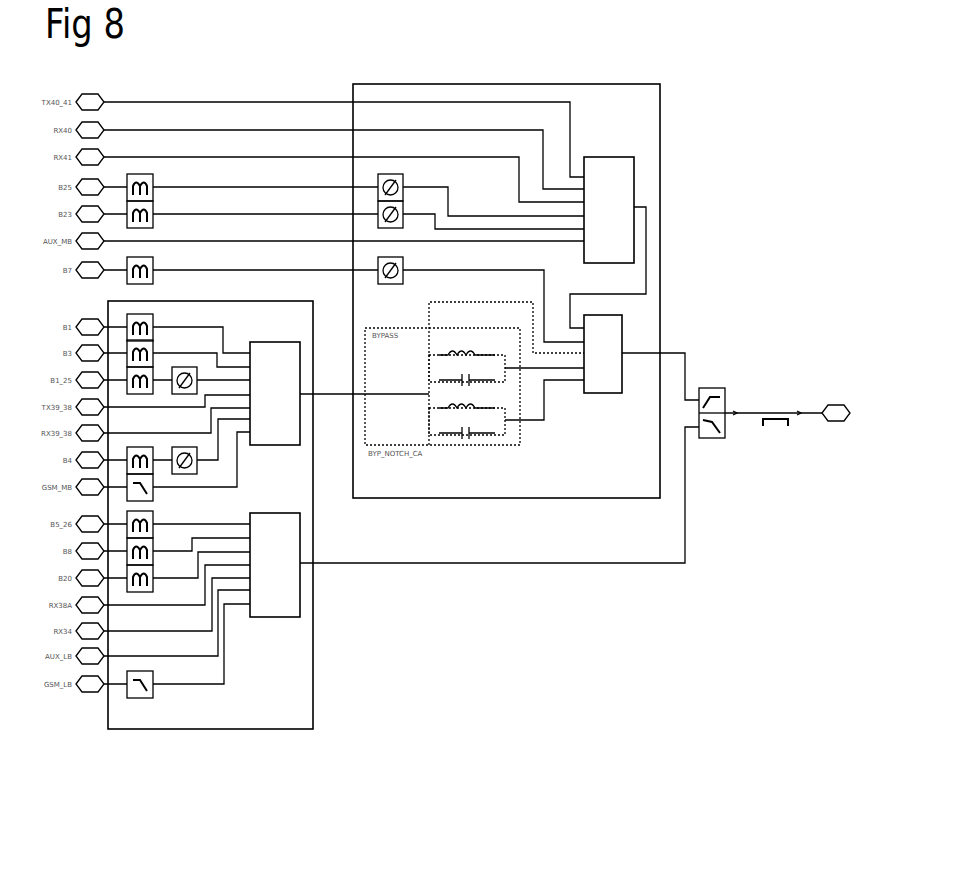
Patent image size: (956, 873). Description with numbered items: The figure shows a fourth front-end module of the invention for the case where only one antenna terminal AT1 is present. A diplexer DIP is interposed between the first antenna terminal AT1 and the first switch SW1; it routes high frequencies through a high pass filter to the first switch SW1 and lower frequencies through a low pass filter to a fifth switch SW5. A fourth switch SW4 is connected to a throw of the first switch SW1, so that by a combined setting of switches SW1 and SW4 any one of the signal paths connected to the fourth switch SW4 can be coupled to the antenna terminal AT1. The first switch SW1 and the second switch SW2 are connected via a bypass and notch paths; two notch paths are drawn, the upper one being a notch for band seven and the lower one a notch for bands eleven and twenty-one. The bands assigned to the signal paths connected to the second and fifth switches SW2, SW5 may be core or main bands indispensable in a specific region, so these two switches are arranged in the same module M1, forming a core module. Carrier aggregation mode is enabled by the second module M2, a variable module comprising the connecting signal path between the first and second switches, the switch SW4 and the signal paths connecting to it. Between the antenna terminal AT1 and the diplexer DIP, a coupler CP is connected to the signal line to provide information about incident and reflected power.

The core module M1 is at (300, 732).
The second module M2 is at (545, 498).
The first switch SW1 is at (633, 313).
The second switch SW2 is at (292, 443).
The fourth switch SW4 is at (634, 188).
The fifth switch SW5 is at (284, 590).
The diplexer DIP is at (716, 388).
The coupler CP is at (780, 440).
The first antenna terminal AT1 is at (835, 405).